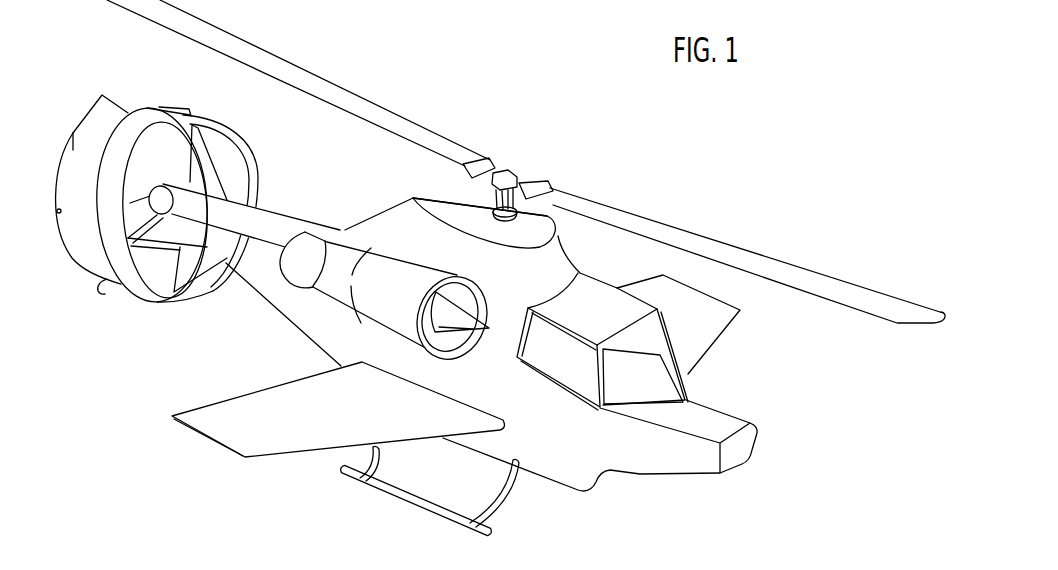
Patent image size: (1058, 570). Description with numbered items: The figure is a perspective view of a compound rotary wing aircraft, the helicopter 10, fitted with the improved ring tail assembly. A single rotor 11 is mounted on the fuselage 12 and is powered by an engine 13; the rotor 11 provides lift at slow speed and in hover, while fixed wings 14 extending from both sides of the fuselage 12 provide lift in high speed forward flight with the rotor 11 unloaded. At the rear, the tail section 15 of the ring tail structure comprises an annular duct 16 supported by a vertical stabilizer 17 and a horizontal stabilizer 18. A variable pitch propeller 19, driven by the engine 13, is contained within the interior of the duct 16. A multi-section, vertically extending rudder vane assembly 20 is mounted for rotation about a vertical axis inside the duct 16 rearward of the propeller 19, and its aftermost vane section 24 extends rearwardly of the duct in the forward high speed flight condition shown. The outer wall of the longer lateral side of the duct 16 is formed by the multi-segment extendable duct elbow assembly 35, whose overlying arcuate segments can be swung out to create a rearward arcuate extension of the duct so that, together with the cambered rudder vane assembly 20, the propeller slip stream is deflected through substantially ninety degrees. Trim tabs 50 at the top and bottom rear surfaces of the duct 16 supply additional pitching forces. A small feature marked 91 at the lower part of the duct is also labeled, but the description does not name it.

The helicopter 10 is at (762, 390).
The rotor 11 is at (650, 224).
The fuselage 12 is at (403, 201).
The engine 13 is at (395, 301).
The fixed wings 14 is at (346, 420).
The tail section 15 is at (170, 310).
The annular duct 16 is at (203, 115).
The vertical stabilizer 17 is at (210, 178).
The horizontal stabilizer 18 is at (261, 196).
The variable pitch propeller 19 is at (178, 158).
The rudder vane assembly 20 is at (92, 104).
The vane section 24 is at (113, 109).
The extendable duct elbow assembly 35 is at (78, 179).
The trim tabs 50 is at (171, 106).
The lower lip tab 91 is at (89, 264).